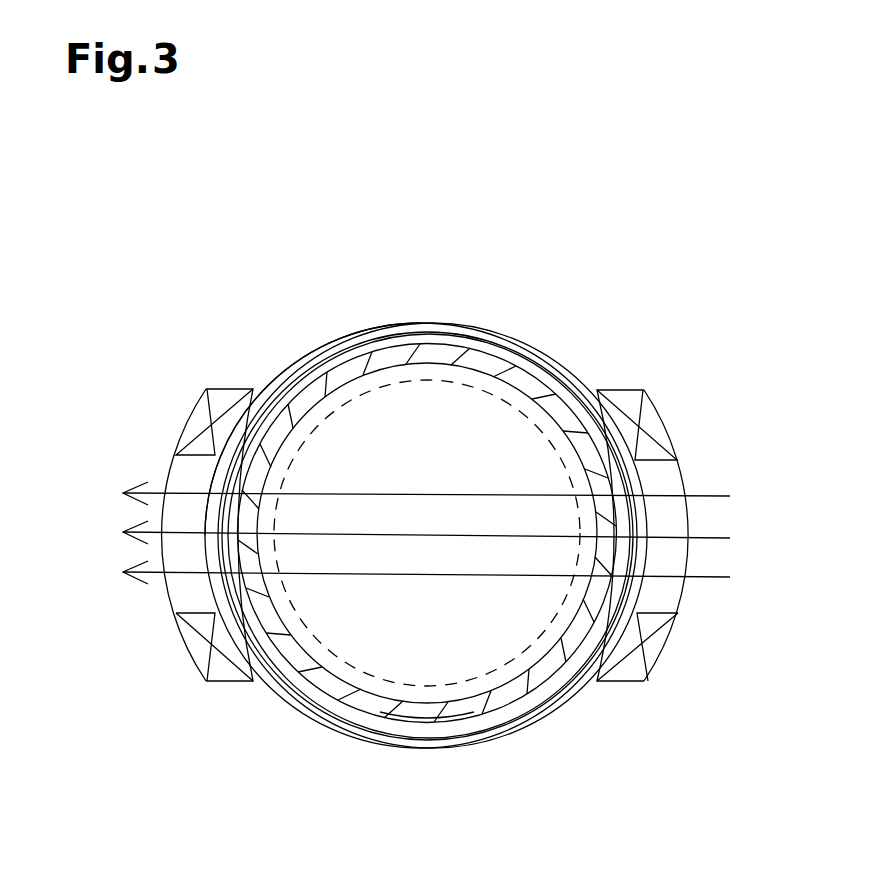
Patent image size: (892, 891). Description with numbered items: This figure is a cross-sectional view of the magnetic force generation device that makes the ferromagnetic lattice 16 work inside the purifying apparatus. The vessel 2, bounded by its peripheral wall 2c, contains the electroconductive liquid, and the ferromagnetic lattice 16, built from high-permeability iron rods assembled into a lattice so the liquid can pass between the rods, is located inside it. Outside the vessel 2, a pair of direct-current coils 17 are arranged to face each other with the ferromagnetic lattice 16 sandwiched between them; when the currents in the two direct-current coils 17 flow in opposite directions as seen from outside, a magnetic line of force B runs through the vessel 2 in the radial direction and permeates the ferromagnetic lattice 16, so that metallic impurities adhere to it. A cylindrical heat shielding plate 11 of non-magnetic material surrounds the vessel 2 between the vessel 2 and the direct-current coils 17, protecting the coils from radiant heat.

The vessel 2 is at (437, 357).
The peripheral wall 2c is at (452, 713).
The heat shielding plate 11 is at (352, 340).
The ferromagnetic lattice 16 is at (318, 708).
The direct-current coils 17 is at (192, 422).
The magnetic line of force B is at (744, 497).